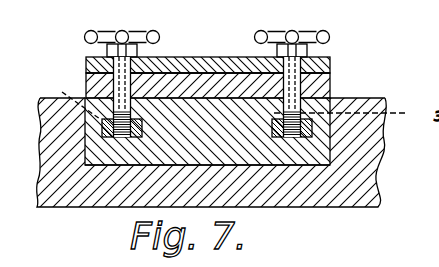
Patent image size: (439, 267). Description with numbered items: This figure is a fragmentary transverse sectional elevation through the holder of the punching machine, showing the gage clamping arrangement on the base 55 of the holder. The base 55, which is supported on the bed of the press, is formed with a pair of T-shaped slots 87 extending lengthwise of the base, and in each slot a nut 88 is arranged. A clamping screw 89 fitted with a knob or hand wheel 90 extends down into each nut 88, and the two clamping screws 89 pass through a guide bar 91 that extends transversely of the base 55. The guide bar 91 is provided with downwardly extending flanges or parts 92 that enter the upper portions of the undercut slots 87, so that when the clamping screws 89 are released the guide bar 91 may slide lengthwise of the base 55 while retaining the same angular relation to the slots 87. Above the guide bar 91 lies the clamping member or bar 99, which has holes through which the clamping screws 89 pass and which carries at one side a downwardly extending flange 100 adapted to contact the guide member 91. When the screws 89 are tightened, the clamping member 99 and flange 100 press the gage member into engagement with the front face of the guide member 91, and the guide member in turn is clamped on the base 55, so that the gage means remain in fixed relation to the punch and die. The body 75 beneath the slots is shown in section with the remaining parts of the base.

The body 75 is at (378, 184).
The guide bar 91 is at (331, 95).
The clamping screw 89 is at (328, 88).
The clamping member 99 is at (228, 57).
The downwardly extending flange 100 is at (183, 73).
The base 55 is at (125, 167).
The hand wheel 90 is at (118, 31).
The nut 88 is at (313, 128).
The T-shaped slot 87 is at (117, 137).
The downwardly extending flange 92 is at (62, 92).